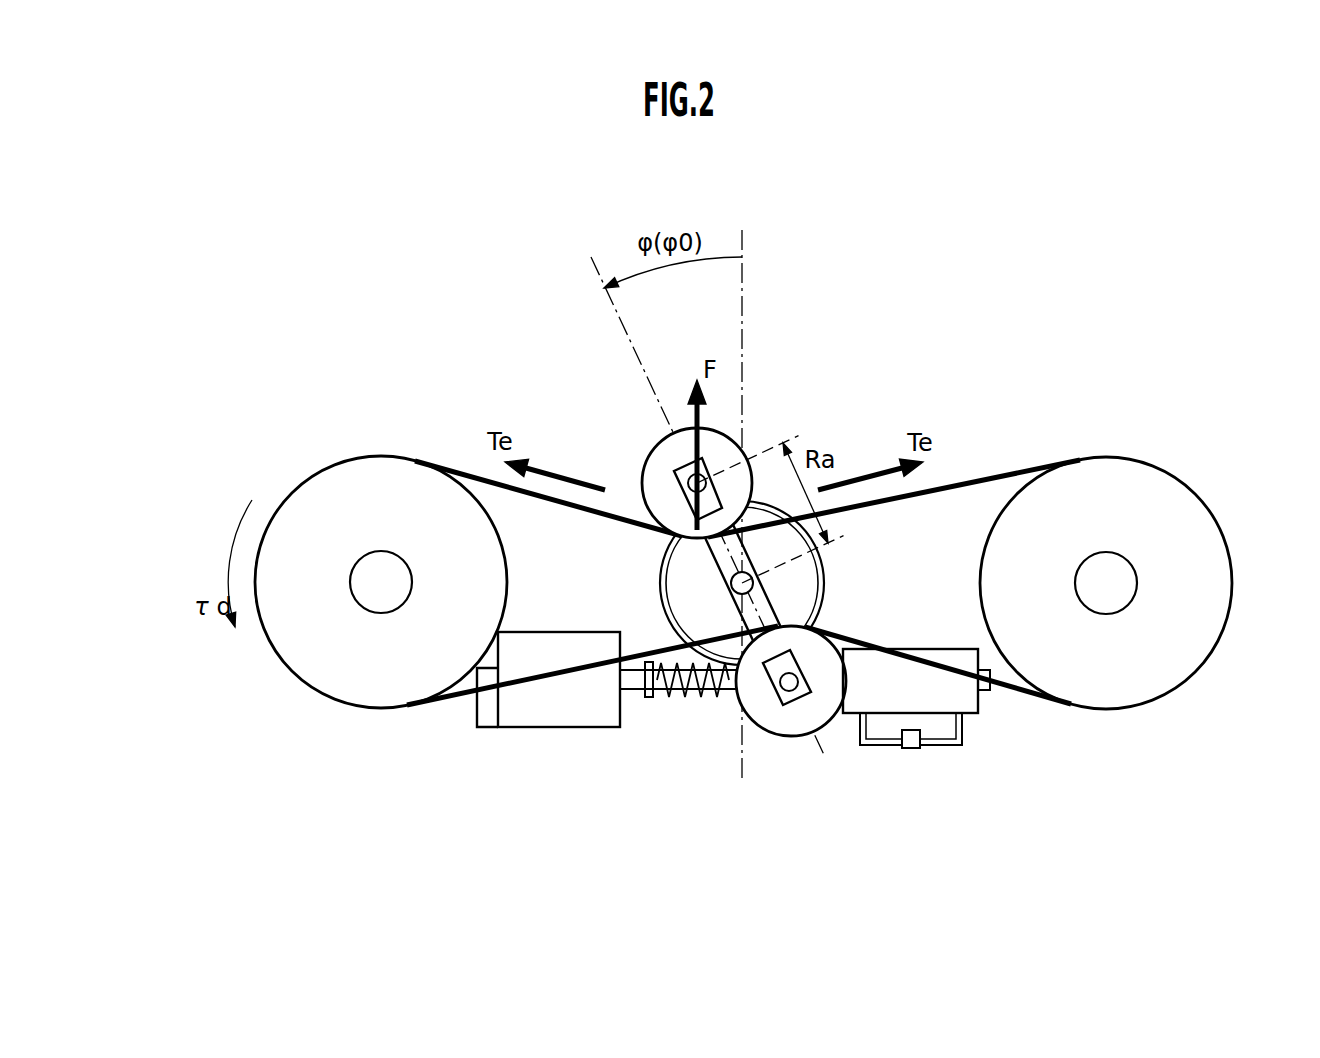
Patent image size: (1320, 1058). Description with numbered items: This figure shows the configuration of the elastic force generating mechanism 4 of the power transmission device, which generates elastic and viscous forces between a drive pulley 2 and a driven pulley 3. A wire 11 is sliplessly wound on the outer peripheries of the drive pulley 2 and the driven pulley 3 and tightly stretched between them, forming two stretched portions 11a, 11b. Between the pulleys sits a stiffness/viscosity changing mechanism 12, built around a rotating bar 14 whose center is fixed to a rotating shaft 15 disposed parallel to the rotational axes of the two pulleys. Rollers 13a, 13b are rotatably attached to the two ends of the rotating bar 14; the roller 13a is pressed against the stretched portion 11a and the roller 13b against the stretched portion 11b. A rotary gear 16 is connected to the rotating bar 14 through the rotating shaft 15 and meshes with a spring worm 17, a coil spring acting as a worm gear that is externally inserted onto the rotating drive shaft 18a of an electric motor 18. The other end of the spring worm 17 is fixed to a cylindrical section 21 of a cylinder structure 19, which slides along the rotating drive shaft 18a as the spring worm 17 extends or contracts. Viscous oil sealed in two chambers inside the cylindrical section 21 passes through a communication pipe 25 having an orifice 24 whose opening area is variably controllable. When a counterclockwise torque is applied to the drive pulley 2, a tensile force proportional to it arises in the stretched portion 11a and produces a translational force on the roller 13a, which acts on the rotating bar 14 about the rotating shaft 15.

The drive pulley 2 is at (338, 463).
The driven pulley 3 is at (1148, 465).
The elastic force generating mechanism 4 is at (936, 380).
The wire 11 is at (743, 589).
The stretched portion 11a is at (578, 510).
The stretched portion 11b is at (556, 682).
The stiffness/viscosity changing mechanism 12 is at (857, 786).
The roller 13a is at (648, 455).
The roller 13b is at (776, 735).
The rotating bar 14 is at (712, 557).
The rotating shaft 15 is at (754, 588).
The rotary gear 16 is at (660, 604).
The spring worm 17 is at (688, 696).
The electric motor 18 is at (598, 730).
The rotating drive shaft 18a is at (712, 686).
The cylinder structure 19 is at (921, 637).
The cylindrical section 21 is at (980, 713).
The orifice 24 is at (910, 749).
The communication pipe 25 is at (958, 748).